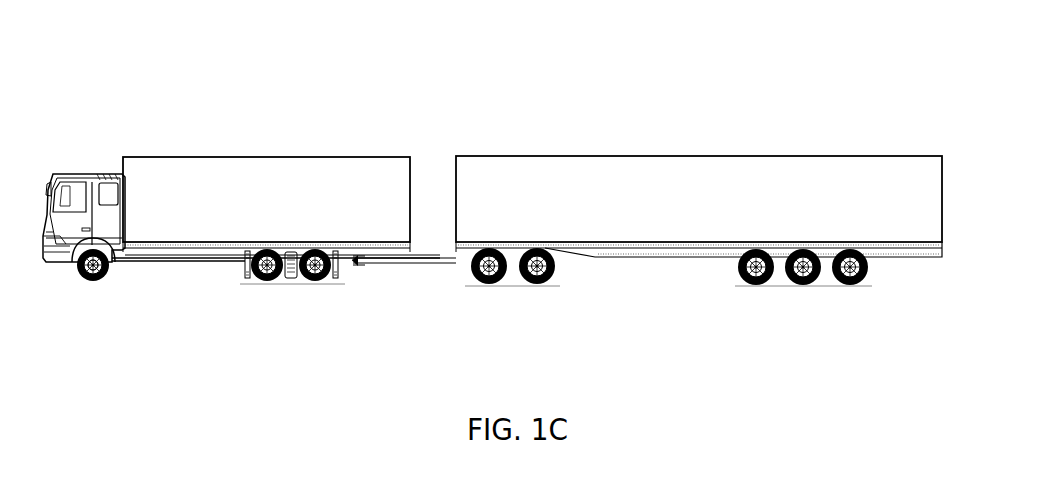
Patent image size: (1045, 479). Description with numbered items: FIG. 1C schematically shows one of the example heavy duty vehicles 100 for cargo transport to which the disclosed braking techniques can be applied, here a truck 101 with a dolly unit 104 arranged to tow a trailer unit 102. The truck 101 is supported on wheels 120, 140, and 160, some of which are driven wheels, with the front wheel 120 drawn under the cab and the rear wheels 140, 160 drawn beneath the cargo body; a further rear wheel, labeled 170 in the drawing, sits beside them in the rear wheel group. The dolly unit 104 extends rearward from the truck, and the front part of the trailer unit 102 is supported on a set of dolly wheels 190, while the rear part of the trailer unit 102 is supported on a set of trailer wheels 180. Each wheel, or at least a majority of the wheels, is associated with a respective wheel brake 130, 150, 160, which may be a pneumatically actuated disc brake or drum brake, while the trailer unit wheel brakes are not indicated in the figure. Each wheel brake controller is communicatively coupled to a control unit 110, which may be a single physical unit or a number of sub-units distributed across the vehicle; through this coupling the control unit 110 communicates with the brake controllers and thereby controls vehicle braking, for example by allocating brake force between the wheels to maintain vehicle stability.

The vehicle 100 is at (122, 76).
The cab / tractor unit 101 is at (96, 179).
The trailer unit 102 is at (565, 163).
The dolly unit 104 is at (437, 262).
The control unit 110 is at (107, 229).
The wheel 120 is at (80, 283).
The wheel brake 130 is at (103, 283).
The wheel 140 is at (229, 274).
The wheel brake 150 is at (254, 279).
The wheel 160 is at (300, 278).
The second drive wheel 170 is at (316, 278).
The trailer wheels 180 is at (830, 300).
The dolly wheels 190 is at (552, 297).